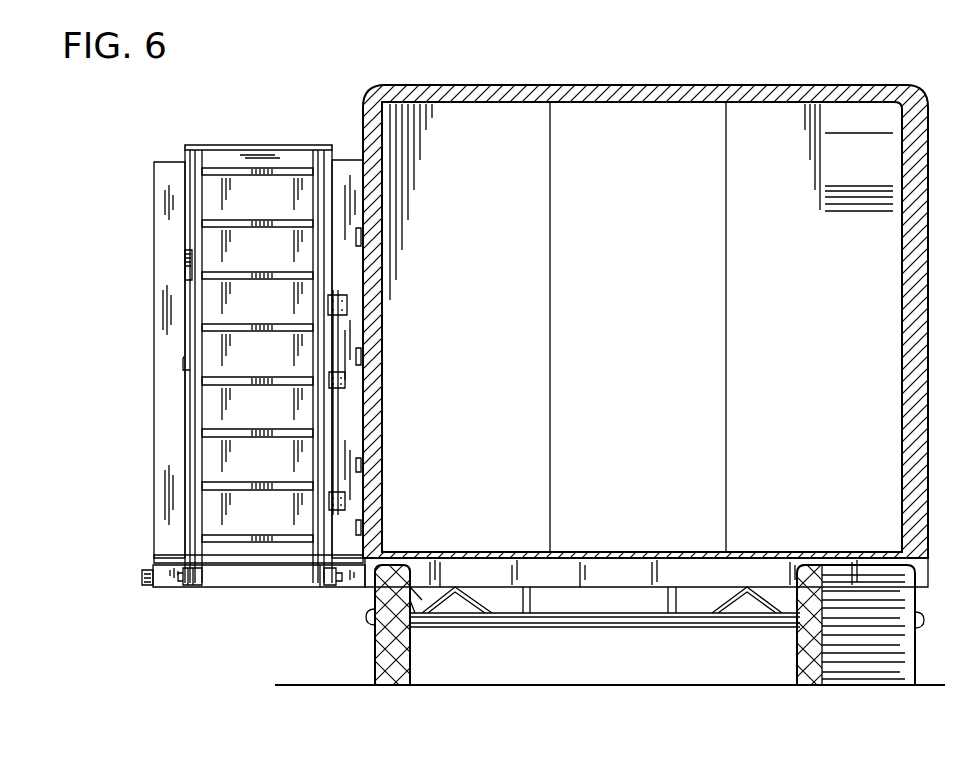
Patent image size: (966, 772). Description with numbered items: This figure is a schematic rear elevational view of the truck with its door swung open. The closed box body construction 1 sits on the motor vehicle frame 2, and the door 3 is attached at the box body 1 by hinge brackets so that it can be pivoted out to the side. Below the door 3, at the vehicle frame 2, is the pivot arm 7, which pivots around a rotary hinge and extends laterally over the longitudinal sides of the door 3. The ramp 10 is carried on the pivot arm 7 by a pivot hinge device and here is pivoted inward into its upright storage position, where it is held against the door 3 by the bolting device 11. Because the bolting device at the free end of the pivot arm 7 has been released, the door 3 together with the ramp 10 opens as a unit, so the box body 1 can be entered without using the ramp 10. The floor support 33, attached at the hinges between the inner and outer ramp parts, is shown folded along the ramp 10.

The closed box body construction 1 is at (610, 357).
The motor vehicle frame 2 is at (620, 573).
The door 3 is at (178, 434).
The pivot arm 7 is at (343, 585).
The ramp 10 is at (260, 395).
The bolting device 11 is at (338, 405).
The floor support 33 is at (186, 252).